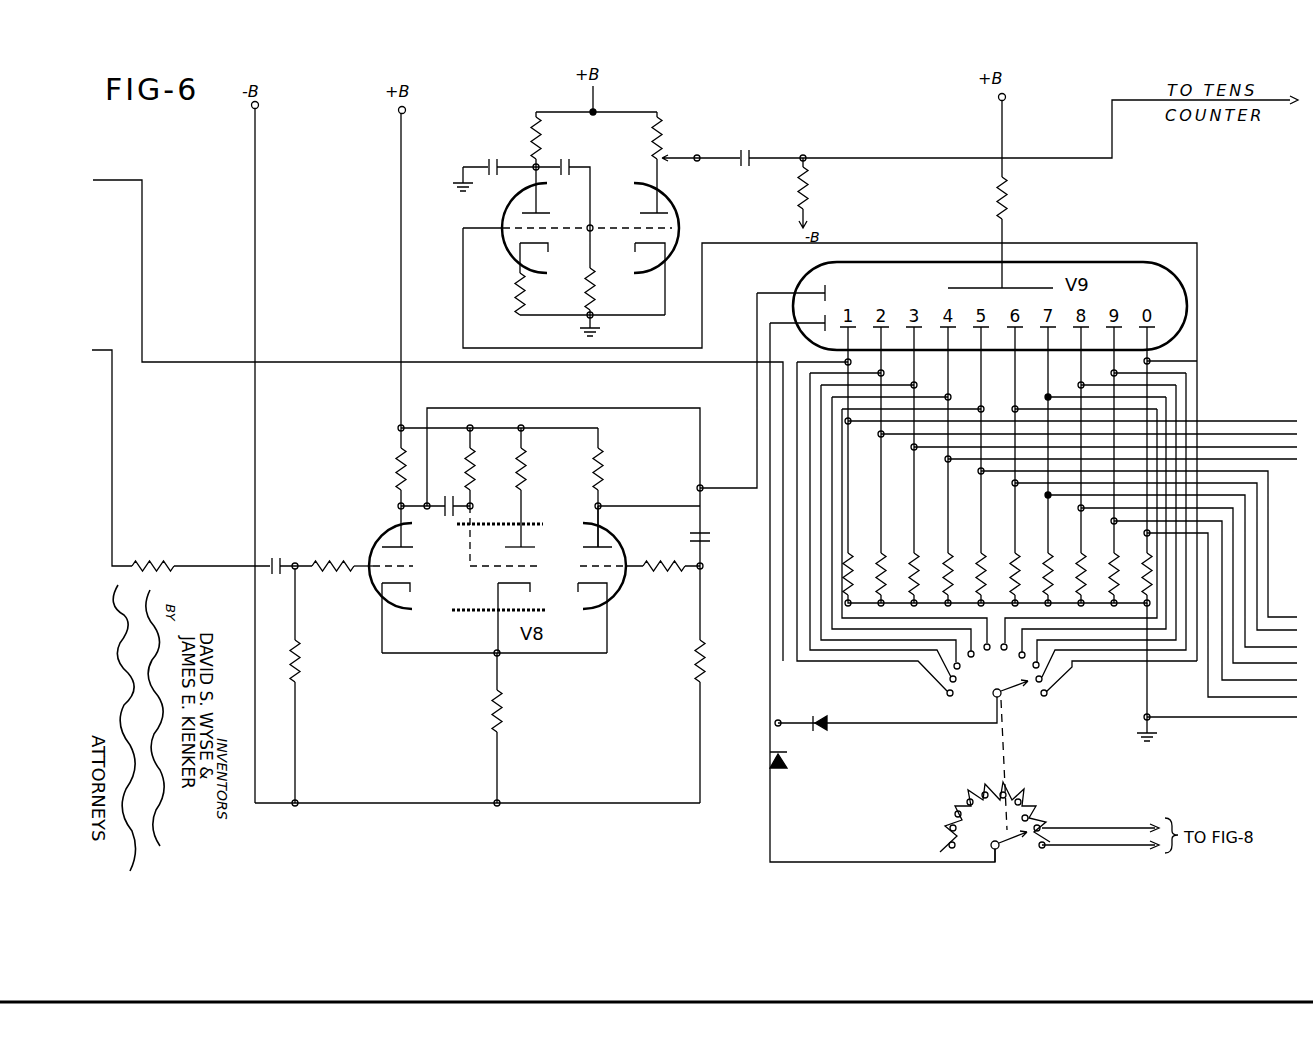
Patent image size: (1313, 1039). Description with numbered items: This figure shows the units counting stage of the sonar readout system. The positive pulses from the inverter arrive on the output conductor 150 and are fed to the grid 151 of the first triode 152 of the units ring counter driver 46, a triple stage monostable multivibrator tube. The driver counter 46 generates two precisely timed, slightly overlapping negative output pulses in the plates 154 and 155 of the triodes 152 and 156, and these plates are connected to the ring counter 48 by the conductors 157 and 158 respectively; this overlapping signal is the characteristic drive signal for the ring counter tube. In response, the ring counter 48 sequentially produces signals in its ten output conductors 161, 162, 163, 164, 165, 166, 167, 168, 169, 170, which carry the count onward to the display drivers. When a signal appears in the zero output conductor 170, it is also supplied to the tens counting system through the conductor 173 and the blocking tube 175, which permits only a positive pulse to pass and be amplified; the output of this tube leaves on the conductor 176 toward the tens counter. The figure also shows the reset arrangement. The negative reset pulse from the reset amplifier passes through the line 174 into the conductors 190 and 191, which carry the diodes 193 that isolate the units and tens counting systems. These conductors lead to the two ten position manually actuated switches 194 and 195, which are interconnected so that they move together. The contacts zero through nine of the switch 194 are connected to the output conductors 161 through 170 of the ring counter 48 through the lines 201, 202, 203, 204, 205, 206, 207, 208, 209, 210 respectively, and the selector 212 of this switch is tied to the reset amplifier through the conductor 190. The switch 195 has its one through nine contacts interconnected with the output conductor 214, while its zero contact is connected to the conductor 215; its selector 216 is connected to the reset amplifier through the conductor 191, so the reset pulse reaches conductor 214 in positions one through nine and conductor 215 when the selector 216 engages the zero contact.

The units ring counter driver 46 is at (441, 665).
The ring counter 48 is at (792, 275).
The output conductor 150 is at (116, 432).
The grid 151 is at (418, 572).
The first triode 152 is at (371, 606).
The plate 154 is at (410, 550).
The plate 155 is at (588, 548).
The triode 156 is at (627, 592).
The conductor 157 is at (514, 407).
The conductor 158 is at (650, 504).
The output conductor 161 is at (846, 362).
The output conductor 162 is at (898, 370).
The output conductor 163 is at (931, 384).
The output conductor 164 is at (963, 392).
The output conductor 165 is at (985, 406).
The output conductor 166 is at (1013, 393).
The output conductor 167 is at (1041, 376).
The output conductor 168 is at (1079, 364).
The output conductor 169 is at (1114, 374).
The 0-output conductor 170 is at (1149, 359).
The conductor 173 is at (463, 262).
The line 174 is at (152, 167).
The blocking tube 175 is at (686, 215).
The conductor 176 is at (1076, 158).
The conductor 190 is at (928, 725).
The conductor 191 is at (782, 808).
The diodes 193 is at (788, 767).
The ten position manually actuated switch 194 is at (939, 699).
The ten position manually actuated switch 195 is at (951, 796).
The line 201 is at (852, 665).
The line 202 is at (805, 638).
The line 203 is at (819, 596).
The line 204 is at (829, 560).
The line 205 is at (841, 521).
The line 206 is at (1160, 414).
The line 207 is at (1153, 628).
The line 208 is at (1100, 640).
The line 209 is at (1076, 650).
The line 210 is at (1060, 692).
The selector 212 is at (1010, 694).
The output conductor 214 is at (1078, 826).
The conductor 215 is at (1100, 846).
The selector 216 is at (1010, 850).